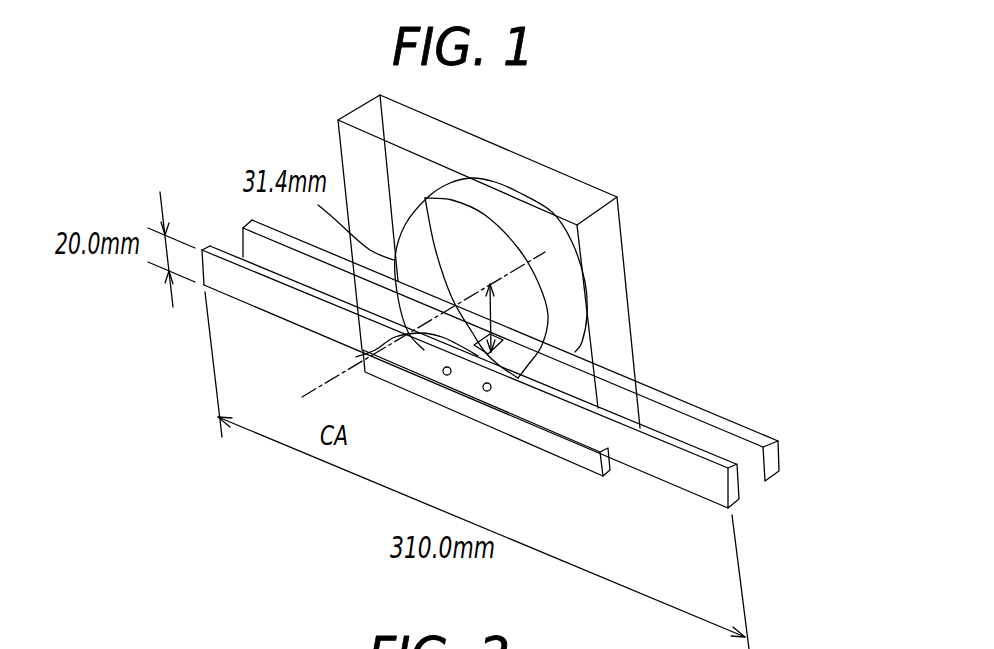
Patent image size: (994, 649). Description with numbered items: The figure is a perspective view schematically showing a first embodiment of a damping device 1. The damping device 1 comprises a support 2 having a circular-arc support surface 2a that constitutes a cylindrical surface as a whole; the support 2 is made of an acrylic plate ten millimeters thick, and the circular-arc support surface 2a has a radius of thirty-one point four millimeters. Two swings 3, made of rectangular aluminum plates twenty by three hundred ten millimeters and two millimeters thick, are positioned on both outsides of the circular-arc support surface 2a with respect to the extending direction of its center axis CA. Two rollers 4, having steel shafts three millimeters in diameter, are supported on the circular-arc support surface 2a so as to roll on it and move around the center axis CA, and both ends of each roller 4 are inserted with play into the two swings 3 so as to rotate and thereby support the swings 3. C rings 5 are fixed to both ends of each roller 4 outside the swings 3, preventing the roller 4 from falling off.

The damping device 1 is at (604, 174).
The support 2 is at (619, 285).
The circular-arc support surface 2a is at (419, 237).
The swings 3 is at (710, 432).
The rollers 4 is at (367, 357).
The C rings 5 is at (487, 391).